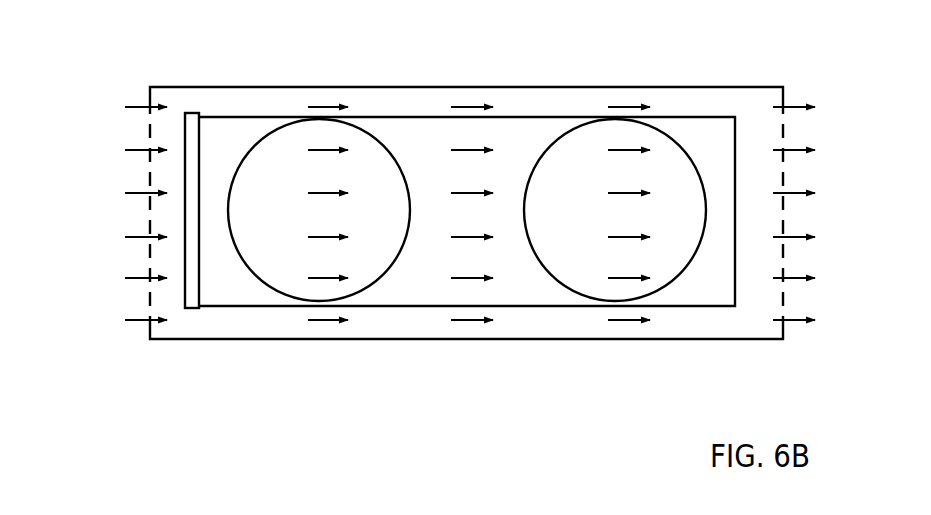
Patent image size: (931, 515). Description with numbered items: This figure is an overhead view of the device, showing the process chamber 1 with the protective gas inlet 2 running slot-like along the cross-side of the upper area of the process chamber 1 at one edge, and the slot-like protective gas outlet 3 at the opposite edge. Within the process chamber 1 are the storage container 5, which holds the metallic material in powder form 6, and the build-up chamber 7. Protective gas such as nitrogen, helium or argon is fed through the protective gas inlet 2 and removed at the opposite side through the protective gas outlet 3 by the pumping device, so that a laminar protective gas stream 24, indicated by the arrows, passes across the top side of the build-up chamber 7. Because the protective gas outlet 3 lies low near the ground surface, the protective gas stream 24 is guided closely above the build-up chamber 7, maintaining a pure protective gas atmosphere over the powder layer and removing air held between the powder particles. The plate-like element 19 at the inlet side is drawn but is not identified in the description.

The process chamber 1 is at (508, 88).
The protective gas inlet 2 is at (133, 100).
The protective gas outlet 3 is at (785, 140).
The storage container 5 is at (283, 138).
The metallic material in powder form 6 is at (406, 128).
The build-up chamber 7 is at (598, 128).
The partition plate 19 is at (190, 118).
The laminar protective gas stream 24 is at (319, 107).